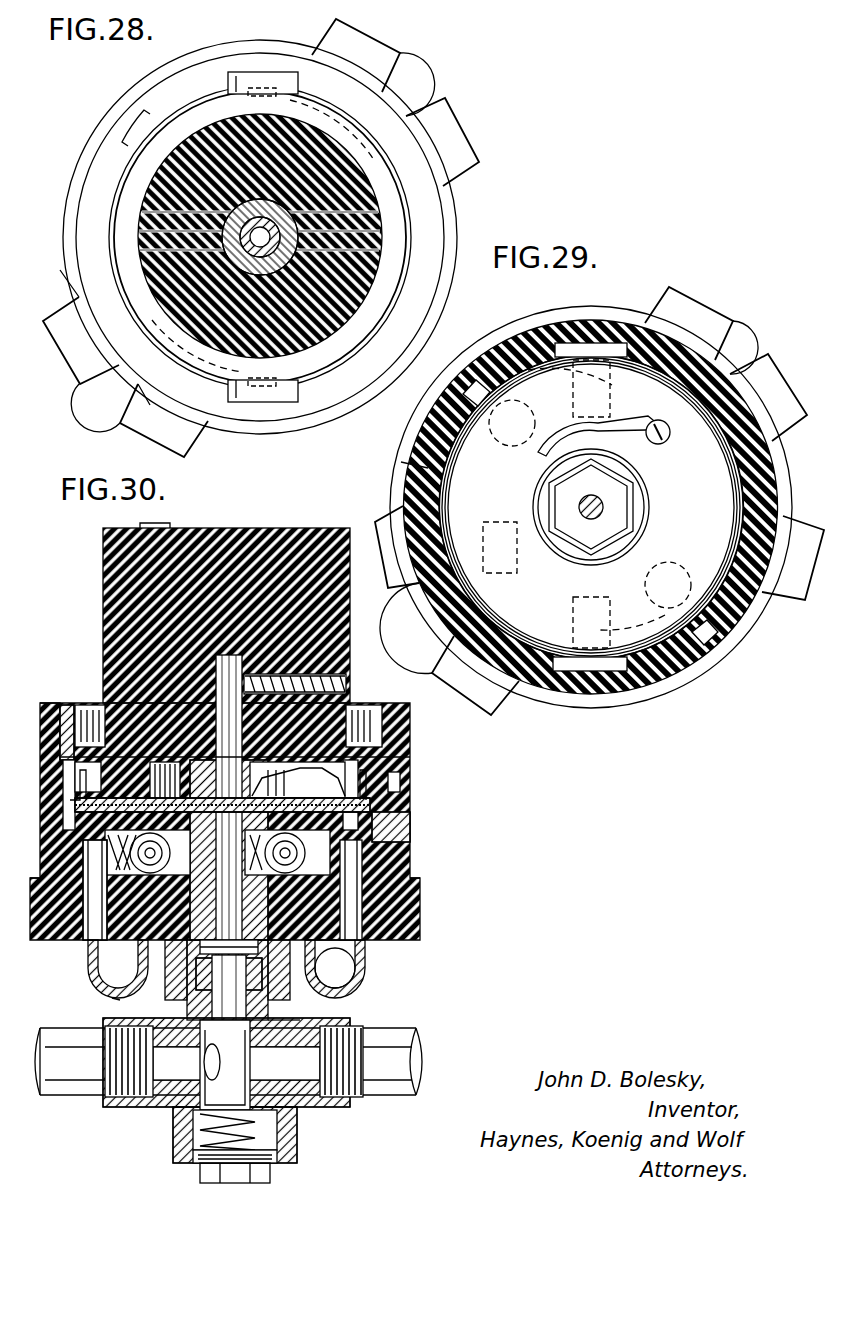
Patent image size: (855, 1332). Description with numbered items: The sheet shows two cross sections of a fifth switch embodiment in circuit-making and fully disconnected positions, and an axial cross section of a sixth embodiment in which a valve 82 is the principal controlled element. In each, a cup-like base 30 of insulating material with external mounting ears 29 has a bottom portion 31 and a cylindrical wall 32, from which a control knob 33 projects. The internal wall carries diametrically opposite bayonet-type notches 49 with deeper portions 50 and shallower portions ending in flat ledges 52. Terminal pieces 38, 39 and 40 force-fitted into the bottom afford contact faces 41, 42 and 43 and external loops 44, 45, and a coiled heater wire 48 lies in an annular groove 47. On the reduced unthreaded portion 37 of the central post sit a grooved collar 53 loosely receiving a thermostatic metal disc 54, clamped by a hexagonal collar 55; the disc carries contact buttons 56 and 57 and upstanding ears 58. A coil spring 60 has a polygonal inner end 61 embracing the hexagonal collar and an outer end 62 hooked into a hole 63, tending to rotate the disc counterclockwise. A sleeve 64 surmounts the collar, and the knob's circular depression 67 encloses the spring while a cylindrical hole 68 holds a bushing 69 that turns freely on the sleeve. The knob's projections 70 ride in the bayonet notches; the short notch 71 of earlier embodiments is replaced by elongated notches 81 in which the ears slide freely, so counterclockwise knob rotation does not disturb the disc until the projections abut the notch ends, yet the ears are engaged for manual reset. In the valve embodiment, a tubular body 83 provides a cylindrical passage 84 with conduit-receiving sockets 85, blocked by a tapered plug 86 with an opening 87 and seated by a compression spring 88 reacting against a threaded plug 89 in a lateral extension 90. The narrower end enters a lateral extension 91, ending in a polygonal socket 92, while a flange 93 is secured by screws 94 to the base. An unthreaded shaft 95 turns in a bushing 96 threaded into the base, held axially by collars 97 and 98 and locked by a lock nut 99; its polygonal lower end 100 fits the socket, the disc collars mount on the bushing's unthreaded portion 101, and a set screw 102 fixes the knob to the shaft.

In FIG. 28, the mounting ears 29 is at (105, 410).
In FIG. 29, the mounting ears 29 is at (468, 690).
In FIG. 28, the base 30 is at (473, 188).
In FIG. 29, the base 30 is at (729, 294).
In FIG. 28, the bottom portion 31 is at (432, 312).
In FIG. 29, the cylindrical wall 32 is at (760, 598).
In FIG. 30, the cylindrical wall 32 is at (408, 712).
In FIG. 28, the control knob 33 is at (380, 214).
In FIG. 30, the control knob 33 is at (103, 578).
In FIG. 28, the unthreaded cylindrical portion 37 is at (302, 242).
In FIG. 29, the unthreaded cylindrical portion 37 is at (604, 505).
In FIG. 30, the terminal piece 38 is at (372, 950).
In FIG. 30, the terminal piece 39 is at (90, 970).
In FIG. 30, the terminal piece 40 is at (160, 770).
In FIG. 29, the contact face 41 is at (612, 400).
In FIG. 30, the contact face 41 is at (400, 822).
In FIG. 29, the contact face 42 is at (612, 618).
In FIG. 29, the contact face 43 is at (494, 522).
In FIG. 30, the external loop 44 is at (330, 1020).
In FIG. 30, the external loop 45 is at (112, 1003).
In FIG. 30, the annular groove 47 is at (405, 845).
In FIG. 30, the heater wire 48 is at (395, 835).
In FIG. 28, the bayonet-type notches 49 is at (370, 372).
In FIG. 29, the bayonet-type notches 49 is at (650, 690).
In FIG. 30, the bayonet-type notches 49 is at (66, 705).
In FIG. 28, the deeper portions 50 is at (255, 410).
In FIG. 29, the deeper portions 50 is at (590, 672).
In FIG. 28, the ledges 52 is at (130, 128).
In FIG. 30, the grooved collar 53 is at (110, 915).
In FIG. 29, the thermostatic metal disc 54 is at (430, 468).
In FIG. 30, the thermostatic metal disc 54 is at (380, 800).
In FIG. 29, the hexagonal collar 55 is at (560, 498).
In FIG. 30, the hexagonal collar 55 is at (385, 776).
In FIG. 29, the contact button 56 is at (510, 446).
In FIG. 30, the contact button 56 is at (385, 820).
In FIG. 29, the contact button 57 is at (648, 574).
In FIG. 30, the contact button 57 is at (50, 935).
In FIG. 28, the upstanding ears 58 is at (265, 395).
In FIG. 29, the upstanding ears 58 is at (712, 662).
In FIG. 30, the upstanding ears 58 is at (400, 780).
In FIG. 29, the coil spring 60 is at (640, 530).
In FIG. 29, the inner end 61 is at (630, 512).
In FIG. 29, the outer end 62 is at (662, 446).
In FIG. 29, the hole 63 is at (672, 436).
In FIG. 28, the sleeve 64 is at (200, 231).
In FIG. 30, the circular depression 67 is at (60, 700).
In FIG. 28, the cylindrical hole 68 is at (200, 250).
In FIG. 28, the bushing 69 is at (200, 212).
In FIG. 28, the projections 70 is at (240, 398).
In FIG. 30, the projections 70 is at (408, 730).
In FIG. 30, the notch 71 is at (408, 752).
In FIG. 28, the elongated notches 81 is at (300, 90).
In FIG. 29, the elongated notches 81 is at (535, 380).
In FIG. 30, the valve 82 is at (376, 1027).
In FIG. 30, the tubular body 83 is at (170, 1070).
In FIG. 30, the cylindrical passage 84 is at (165, 1105).
In FIG. 30, the conduit-receiving sockets 85 is at (110, 1100).
In FIG. 30, the tapered plug 86 is at (192, 1130).
In FIG. 30, the opening 87 is at (195, 1100).
In FIG. 30, the compression spring 88 is at (265, 1133).
In FIG. 30, the threaded plug 89 is at (250, 1178).
In FIG. 30, the lateral extension 90 is at (272, 1160).
In FIG. 30, the lateral extension 91 is at (276, 1008).
In FIG. 30, the polygonal socket 92 is at (328, 960).
In FIG. 30, the flange 93 is at (340, 965).
In FIG. 30, the screws 94 is at (165, 968).
In FIG. 30, the shaft 95 is at (245, 825).
In FIG. 30, the bushing 96 is at (395, 868).
In FIG. 30, the collar 97 is at (205, 985).
In FIG. 30, the collar 98 is at (100, 655).
In FIG. 30, the lock nut 99 is at (128, 955).
In FIG. 30, the lower end 100 is at (200, 995).
In FIG. 30, the unthreaded portion 101 is at (100, 700).
In FIG. 30, the set screw 102 is at (368, 708).